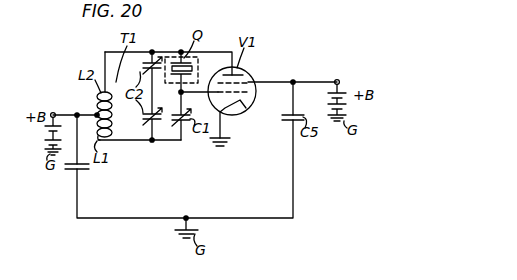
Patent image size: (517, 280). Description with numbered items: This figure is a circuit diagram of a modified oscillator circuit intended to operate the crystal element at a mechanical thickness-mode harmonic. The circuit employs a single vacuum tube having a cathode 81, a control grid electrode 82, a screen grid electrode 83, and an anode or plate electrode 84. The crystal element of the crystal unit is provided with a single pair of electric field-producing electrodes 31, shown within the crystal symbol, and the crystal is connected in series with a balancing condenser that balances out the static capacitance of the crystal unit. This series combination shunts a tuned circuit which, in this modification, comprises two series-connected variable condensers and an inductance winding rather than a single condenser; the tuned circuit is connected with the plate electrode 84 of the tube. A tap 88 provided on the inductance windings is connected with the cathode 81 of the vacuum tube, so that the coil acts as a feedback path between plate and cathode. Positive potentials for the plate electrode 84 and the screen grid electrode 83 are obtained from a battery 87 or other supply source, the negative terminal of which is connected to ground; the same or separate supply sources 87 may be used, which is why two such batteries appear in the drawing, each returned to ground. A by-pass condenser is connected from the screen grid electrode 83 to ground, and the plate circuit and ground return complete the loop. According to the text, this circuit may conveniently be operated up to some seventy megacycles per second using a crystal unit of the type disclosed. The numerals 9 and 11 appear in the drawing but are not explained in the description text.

The junction terminal 9 is at (180, 51).
The crystal holder 11 is at (169, 86).
The electric field-producing electrodes 31 is at (193, 69).
The cathode 81 is at (229, 110).
The control grid electrode 82 is at (250, 92).
The screen grid electrode 83 is at (250, 82).
The plate electrode 84 is at (242, 74).
The battery 87 is at (47, 130).
The tap 88 is at (96, 114).